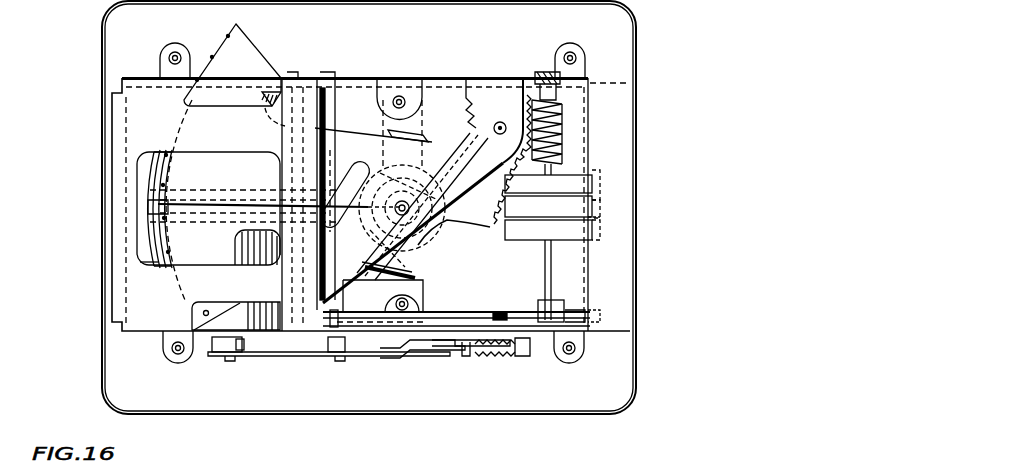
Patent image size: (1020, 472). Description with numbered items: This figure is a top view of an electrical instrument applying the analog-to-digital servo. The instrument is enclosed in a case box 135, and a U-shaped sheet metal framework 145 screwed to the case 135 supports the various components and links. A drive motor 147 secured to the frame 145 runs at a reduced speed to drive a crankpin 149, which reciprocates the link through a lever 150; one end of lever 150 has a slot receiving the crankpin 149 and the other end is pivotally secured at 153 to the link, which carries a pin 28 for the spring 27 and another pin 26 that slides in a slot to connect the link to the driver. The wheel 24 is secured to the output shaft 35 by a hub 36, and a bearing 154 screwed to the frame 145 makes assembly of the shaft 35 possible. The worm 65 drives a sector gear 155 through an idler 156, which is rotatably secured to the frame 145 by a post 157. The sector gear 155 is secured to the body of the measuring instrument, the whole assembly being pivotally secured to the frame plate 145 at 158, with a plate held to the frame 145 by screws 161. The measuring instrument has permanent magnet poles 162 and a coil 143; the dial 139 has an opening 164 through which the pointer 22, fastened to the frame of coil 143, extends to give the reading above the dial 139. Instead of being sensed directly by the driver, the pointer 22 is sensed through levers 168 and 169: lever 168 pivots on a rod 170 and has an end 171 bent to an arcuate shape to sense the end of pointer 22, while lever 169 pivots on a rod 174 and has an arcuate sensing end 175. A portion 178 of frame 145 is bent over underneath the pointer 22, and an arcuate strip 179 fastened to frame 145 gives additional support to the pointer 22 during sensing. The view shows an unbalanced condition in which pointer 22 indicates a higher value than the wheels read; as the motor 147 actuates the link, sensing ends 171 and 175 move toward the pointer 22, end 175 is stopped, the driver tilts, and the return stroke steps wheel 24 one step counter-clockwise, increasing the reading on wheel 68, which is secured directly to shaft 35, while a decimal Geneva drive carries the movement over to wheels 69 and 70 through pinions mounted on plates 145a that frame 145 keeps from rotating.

The case box 135 is at (638, 371).
The U shape sheet metal framework 145 is at (149, 336).
The plates 145a is at (605, 215).
The dial 139 is at (267, 53).
The arcuate strip 179 is at (175, 157).
The arcuate sensing end 175 is at (145, 182).
The end of lever 171 is at (146, 243).
The portion of frame 178 is at (140, 250).
The pointer 22 is at (226, 197).
The rod 170 is at (292, 72).
The rod 174 is at (332, 72).
The opening 164 is at (372, 172).
The screws 161 is at (402, 96).
The coil 143 is at (424, 137).
The pivot pin 158 is at (412, 210).
The sector gear 155 is at (468, 220).
The idler 156 is at (468, 98).
The post 157 is at (500, 121).
The bearing 154 is at (543, 72).
The worm 65 is at (568, 128).
The readout wheel 68 is at (590, 178).
The readout wheel 69 is at (592, 207).
The readout wheel 70 is at (582, 238).
The output shaft 35 is at (545, 267).
The hub 36 is at (540, 301).
The wheel 24 is at (582, 312).
The pin 26 is at (506, 312).
The lever 168 is at (423, 317).
The lever 169 is at (463, 307).
The permanent magnet poles 162 is at (380, 268).
The drive motor 147 is at (248, 318).
The lever 150 is at (312, 355).
The crankpin 149 is at (237, 356).
The pivot 153 is at (446, 350).
The pin 28 is at (468, 352).
The spring 27 is at (498, 352).